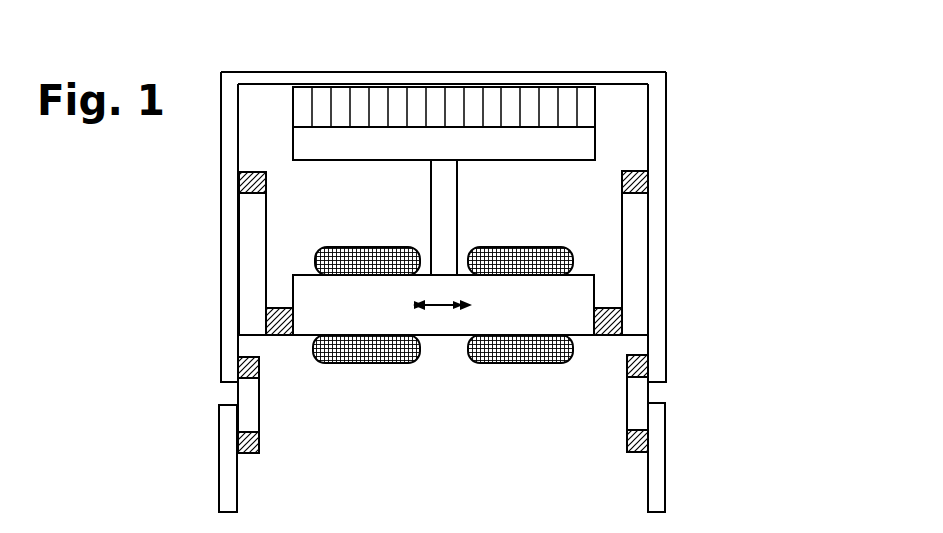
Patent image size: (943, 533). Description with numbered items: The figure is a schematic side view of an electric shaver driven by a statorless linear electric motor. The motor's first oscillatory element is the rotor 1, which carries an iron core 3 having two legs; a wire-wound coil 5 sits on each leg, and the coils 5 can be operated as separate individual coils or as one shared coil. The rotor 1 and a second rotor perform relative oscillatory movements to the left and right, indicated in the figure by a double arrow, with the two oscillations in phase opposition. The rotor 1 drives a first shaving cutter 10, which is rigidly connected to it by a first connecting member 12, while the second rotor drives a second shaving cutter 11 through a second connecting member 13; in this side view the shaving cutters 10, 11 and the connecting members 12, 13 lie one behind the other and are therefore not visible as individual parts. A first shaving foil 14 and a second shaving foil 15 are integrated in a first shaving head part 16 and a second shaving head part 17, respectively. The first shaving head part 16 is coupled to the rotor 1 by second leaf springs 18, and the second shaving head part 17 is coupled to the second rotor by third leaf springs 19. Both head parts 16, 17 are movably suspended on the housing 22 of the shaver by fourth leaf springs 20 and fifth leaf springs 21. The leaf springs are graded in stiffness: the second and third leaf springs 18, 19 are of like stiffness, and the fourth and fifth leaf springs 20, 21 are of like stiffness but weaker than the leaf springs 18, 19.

The first rotor 1 is at (501, 260).
The iron core 3 is at (581, 330).
The wire-wound coil 5 is at (483, 363).
The first shaving cutter 10 is at (537, 124).
The second shaving cutter 11 is at (582, 137).
The first connecting member 12 is at (376, 217).
The second connecting member 13 is at (437, 236).
The first shaving foil 14 is at (443, 46).
The second shaving foil 15 is at (533, 78).
The first shaving head part 16 is at (501, 227).
The second shaving head part 17 is at (660, 124).
The second leaf springs 18 is at (511, 253).
The third leaf springs 19 is at (625, 278).
The fourth leaf springs 20 is at (510, 403).
The fifth leaf springs 21 is at (630, 393).
The housing 22 is at (655, 492).